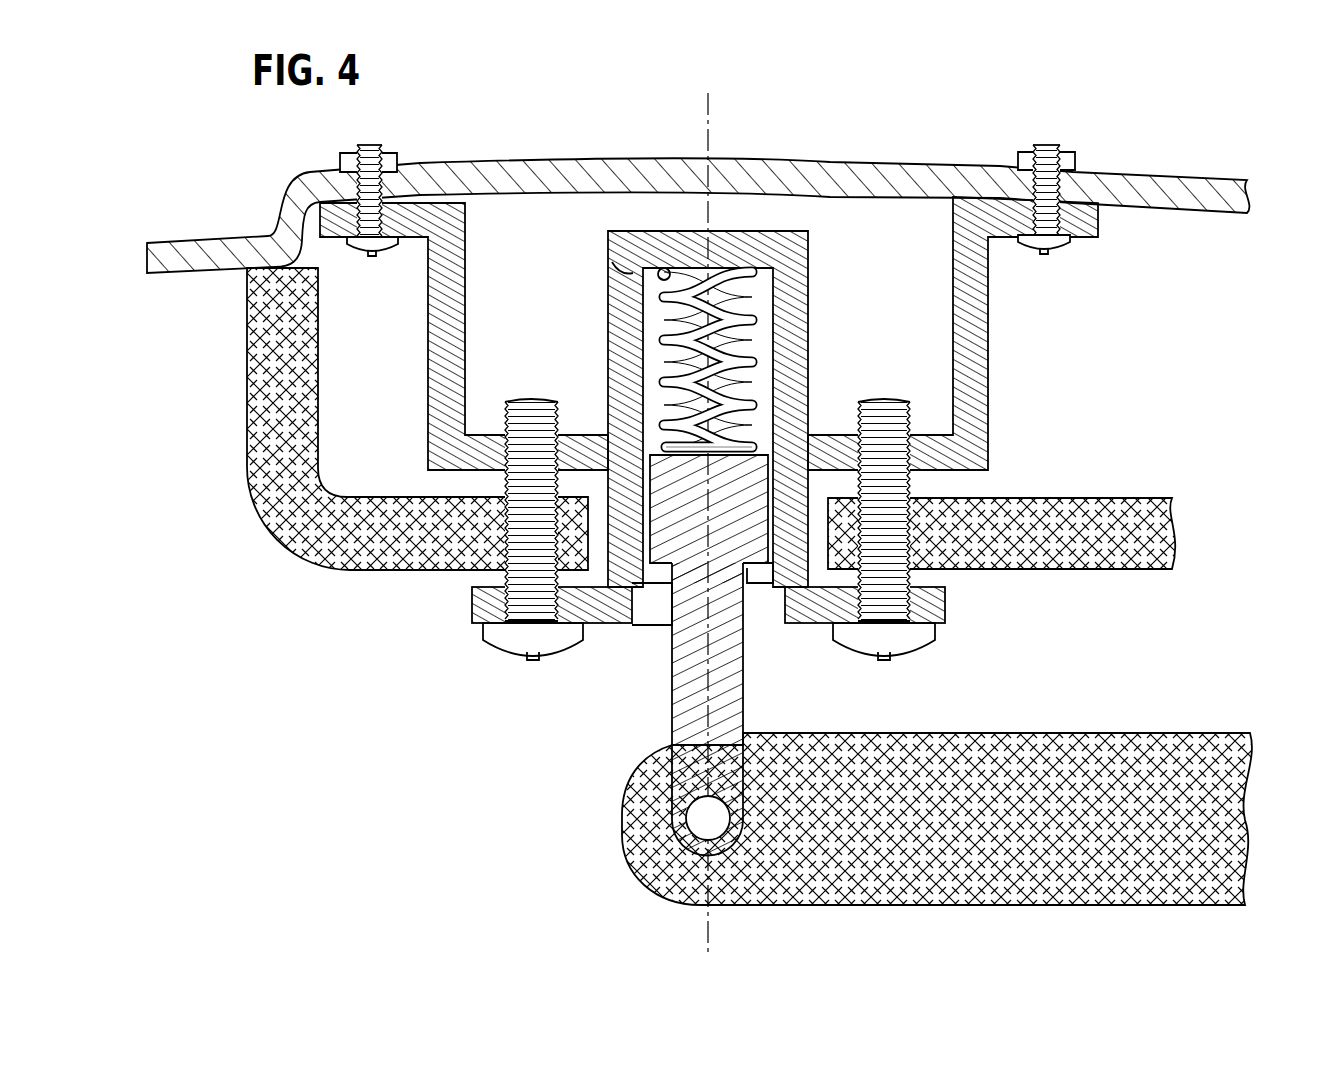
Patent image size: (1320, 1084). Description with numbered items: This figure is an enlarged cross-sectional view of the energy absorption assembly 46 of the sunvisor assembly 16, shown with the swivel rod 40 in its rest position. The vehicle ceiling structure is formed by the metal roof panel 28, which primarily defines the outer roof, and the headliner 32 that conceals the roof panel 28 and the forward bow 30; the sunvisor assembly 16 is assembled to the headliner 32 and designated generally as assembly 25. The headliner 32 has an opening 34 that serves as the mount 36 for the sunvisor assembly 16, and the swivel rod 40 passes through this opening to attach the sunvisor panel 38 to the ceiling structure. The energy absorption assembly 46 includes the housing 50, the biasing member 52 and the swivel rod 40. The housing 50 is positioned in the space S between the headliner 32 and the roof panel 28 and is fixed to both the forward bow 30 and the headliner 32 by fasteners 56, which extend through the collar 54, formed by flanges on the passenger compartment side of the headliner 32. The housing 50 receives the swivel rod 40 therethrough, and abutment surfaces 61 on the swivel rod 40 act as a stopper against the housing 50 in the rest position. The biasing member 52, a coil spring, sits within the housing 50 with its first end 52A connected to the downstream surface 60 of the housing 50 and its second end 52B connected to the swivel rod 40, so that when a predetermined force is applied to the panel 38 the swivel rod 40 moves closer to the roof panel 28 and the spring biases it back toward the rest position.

The sunvisor assembly 16 is at (383, 514).
The support assembly 25 is at (709, 256).
The roof panel 28 is at (1140, 172).
The forward bow 30 is at (990, 313).
The headliner 32 is at (1100, 497).
The opening 34 is at (668, 578).
The mount 36 is at (872, 242).
The panel 38 is at (965, 905).
The swivel rod 40 is at (745, 710).
The energy absorption assembly 46 is at (548, 212).
The housing 50 is at (810, 279).
The biasing member 52 is at (660, 338).
The first end 52A is at (717, 453).
The second end 52B is at (700, 262).
The collar 54 is at (472, 606).
The fasteners 56 is at (490, 645).
The downstream surface 60 is at (612, 262).
The abutment surfaces 61 is at (745, 590).
The space S is at (347, 385).